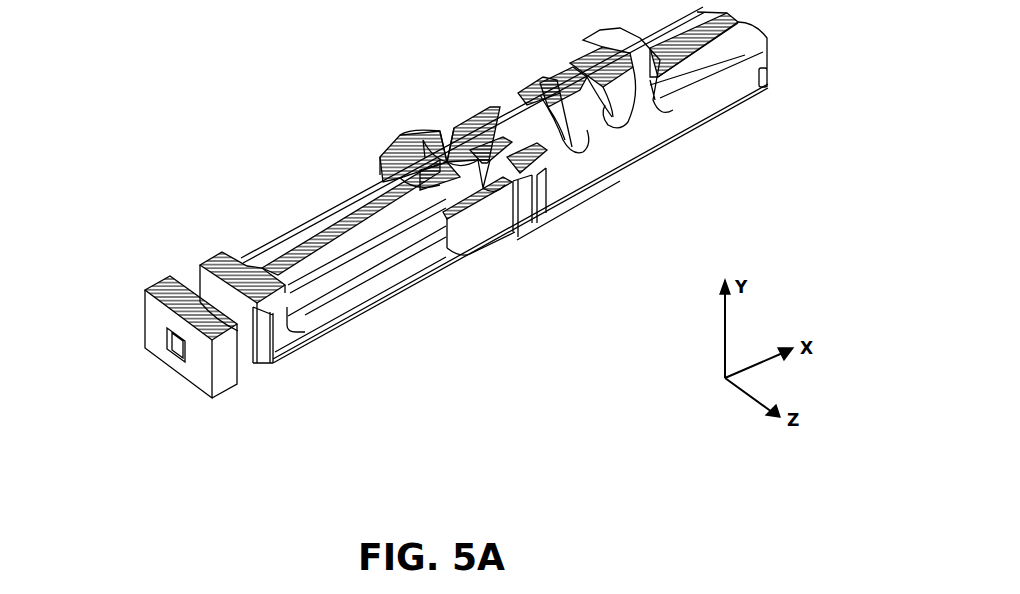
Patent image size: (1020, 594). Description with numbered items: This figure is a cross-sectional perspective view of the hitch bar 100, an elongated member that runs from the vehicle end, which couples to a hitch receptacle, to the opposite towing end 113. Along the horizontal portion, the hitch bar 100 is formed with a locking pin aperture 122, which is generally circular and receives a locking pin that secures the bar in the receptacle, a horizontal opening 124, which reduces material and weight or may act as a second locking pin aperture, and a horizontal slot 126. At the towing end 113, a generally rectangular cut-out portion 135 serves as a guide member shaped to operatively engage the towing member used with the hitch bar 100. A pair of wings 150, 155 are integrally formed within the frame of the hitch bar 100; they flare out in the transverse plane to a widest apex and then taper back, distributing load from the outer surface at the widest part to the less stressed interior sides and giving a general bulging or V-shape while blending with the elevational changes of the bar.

The hitch bar 100 is at (158, 90).
The towing end 113 is at (195, 368).
The locking pin aperture 122 is at (628, 122).
The horizontal opening 124 is at (572, 147).
The horizontal slot 126 is at (735, 57).
The cut-out portion 135 is at (245, 343).
The wing 150 is at (481, 237).
The wing 155 is at (399, 147).